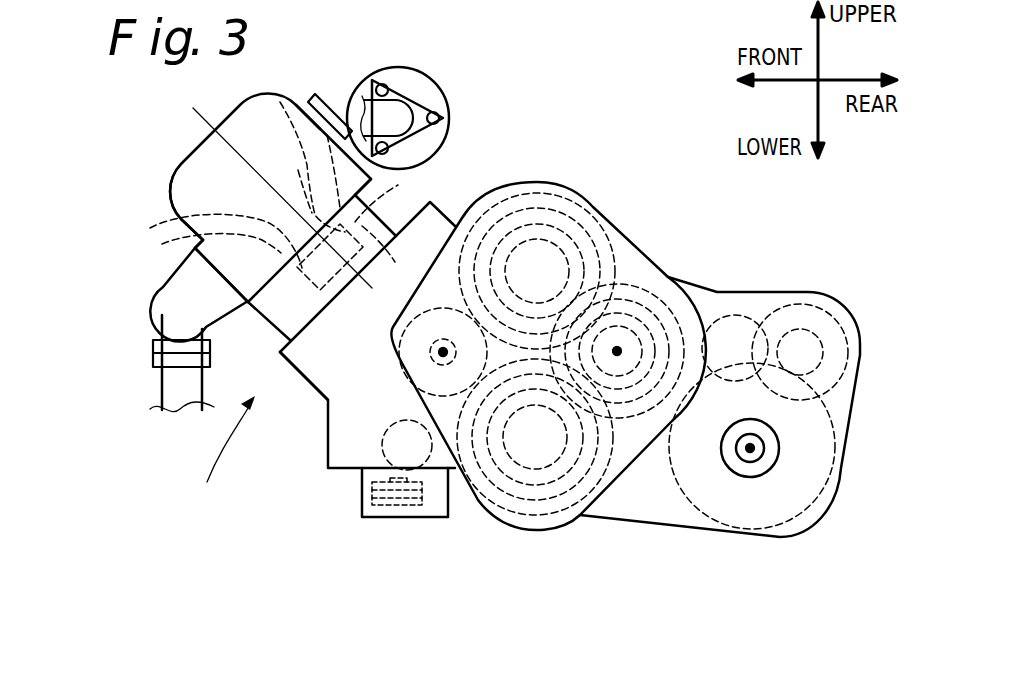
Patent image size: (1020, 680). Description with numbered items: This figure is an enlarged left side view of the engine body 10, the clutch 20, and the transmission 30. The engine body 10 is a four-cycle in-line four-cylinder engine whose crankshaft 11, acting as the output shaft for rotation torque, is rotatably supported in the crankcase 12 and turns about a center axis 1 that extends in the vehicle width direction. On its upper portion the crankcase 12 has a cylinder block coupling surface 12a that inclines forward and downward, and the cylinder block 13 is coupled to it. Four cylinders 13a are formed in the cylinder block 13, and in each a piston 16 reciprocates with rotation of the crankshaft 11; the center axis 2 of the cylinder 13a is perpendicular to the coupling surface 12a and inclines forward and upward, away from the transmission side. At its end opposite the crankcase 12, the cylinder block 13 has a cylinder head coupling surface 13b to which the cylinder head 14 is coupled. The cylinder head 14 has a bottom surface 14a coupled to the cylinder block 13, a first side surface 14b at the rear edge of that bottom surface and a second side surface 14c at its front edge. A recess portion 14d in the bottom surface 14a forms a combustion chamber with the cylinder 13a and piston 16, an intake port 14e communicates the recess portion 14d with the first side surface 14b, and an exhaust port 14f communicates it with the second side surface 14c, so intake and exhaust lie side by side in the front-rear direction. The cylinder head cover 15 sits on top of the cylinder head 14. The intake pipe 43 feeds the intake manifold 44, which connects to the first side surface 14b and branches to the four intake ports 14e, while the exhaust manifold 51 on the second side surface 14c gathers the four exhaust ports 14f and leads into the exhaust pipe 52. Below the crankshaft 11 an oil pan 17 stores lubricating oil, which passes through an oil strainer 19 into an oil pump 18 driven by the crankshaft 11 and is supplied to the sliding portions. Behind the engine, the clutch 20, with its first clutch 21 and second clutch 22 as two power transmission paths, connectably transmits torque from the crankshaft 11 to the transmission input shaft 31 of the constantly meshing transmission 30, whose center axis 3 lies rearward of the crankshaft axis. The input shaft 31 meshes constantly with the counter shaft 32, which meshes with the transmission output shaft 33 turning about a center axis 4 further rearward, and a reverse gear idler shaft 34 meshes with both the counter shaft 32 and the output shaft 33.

The center axis of the crankshaft 1 is at (440, 353).
The center axis of the cylinder 2 is at (193, 115).
The center axis of the transmission input shaft 3 is at (618, 350).
The center axis of the transmission output shaft 4 is at (751, 452).
The engine body 10 is at (216, 450).
The crankshaft 11 is at (420, 384).
The crankcase 12 is at (322, 350).
The cylinder block coupling surface 12a is at (282, 360).
The cylinder block 13 is at (296, 308).
The cylinder 13a is at (366, 268).
The cylinder head coupling surface 13b is at (337, 216).
The cylinder head 14 is at (222, 208).
The bottom surface 14a is at (394, 168).
The first side surface 14b is at (313, 102).
The second side surface 14c is at (190, 231).
The recess portion 14d is at (384, 203).
The intake port 14e is at (288, 94).
The exhaust port 14f is at (168, 260).
The cylinder head cover 15 is at (171, 186).
The piston 16 is at (273, 310).
The oil pan 17 is at (376, 518).
The oil pump 18 is at (343, 473).
The oil strainer 19 is at (360, 494).
The clutch 20 is at (534, 181).
The first clutch 21 is at (600, 202).
The second clutch 22 is at (478, 503).
The transmission 30 is at (630, 524).
The transmission input shaft 31 is at (658, 245).
The counter shaft 32 is at (740, 276).
The transmission output shaft 33 is at (690, 505).
The reverse gear idler shaft 34 is at (820, 284).
The intake pipe 43 is at (442, 97).
The intake manifold 44 is at (415, 68).
The exhaust manifold 51 is at (177, 309).
The exhaust pipe 52 is at (165, 398).